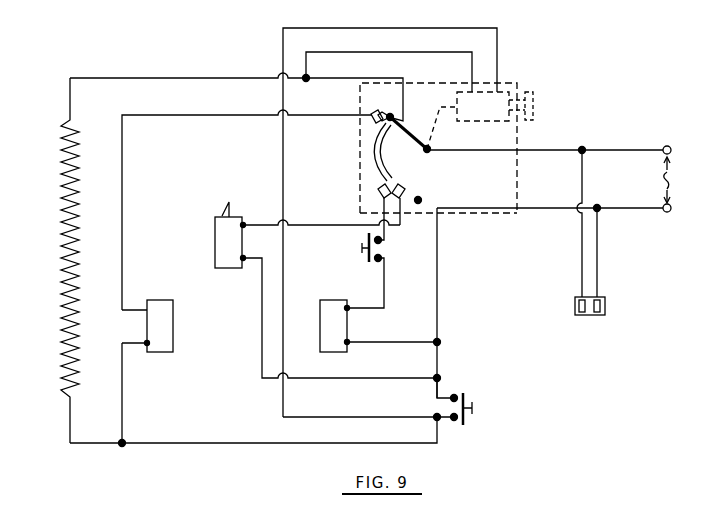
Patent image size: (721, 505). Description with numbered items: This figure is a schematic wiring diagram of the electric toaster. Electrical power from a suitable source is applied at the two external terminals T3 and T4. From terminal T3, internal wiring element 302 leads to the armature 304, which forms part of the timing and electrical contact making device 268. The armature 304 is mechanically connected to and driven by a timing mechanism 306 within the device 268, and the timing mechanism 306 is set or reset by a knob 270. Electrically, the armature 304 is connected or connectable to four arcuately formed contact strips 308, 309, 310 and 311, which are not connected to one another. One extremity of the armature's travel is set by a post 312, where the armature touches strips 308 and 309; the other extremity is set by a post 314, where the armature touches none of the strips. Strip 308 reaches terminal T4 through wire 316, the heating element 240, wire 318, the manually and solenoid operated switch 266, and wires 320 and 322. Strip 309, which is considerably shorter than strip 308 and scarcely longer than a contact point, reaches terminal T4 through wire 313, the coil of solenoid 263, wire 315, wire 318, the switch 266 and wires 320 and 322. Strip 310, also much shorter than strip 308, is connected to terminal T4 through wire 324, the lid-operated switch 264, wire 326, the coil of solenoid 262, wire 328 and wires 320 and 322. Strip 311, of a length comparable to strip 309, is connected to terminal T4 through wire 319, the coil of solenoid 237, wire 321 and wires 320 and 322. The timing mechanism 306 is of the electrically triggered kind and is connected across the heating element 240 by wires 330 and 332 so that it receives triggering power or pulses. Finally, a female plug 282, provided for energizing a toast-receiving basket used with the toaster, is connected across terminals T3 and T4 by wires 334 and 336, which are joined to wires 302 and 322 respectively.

The heating element 240 is at (63, 226).
The wire 316 is at (214, 76).
The wire 313 is at (218, 112).
The wire 330 is at (282, 40).
The wire 332 is at (336, 53).
The timing and electrical contact making device 268 is at (524, 133).
The wire 324 is at (375, 212).
The timing mechanism 306 is at (497, 124).
The knob 270 is at (534, 96).
The post 312 is at (392, 113).
The armature 304 is at (422, 151).
The internal wiring element 302 is at (616, 150).
The external terminal T3 is at (684, 151).
The external terminal T4 is at (684, 219).
The arcuately formed contact strip 308 is at (378, 158).
The arcuately formed contact strip 309 is at (372, 122).
The arcuately formed contact strip 310 is at (378, 190).
The arcuately formed contact strip 311 is at (410, 190).
The post 314 is at (423, 200).
The wire 322 is at (516, 210).
The wire 320 is at (439, 282).
The wire 319 is at (262, 224).
The solenoid 237 is at (215, 247).
The wire 321 is at (262, 308).
The solenoid 263 is at (176, 318).
The wire 315 is at (124, 387).
The wire 318 is at (188, 443).
The lid-operated switch 264 is at (362, 248).
The wire 326 is at (385, 298).
The solenoid 262 is at (333, 300).
The wire 328 is at (374, 342).
The manually and solenoid operated switch 266 is at (466, 394).
The wire 334 is at (582, 263).
The wire 336 is at (598, 263).
The female plug 282 is at (605, 302).